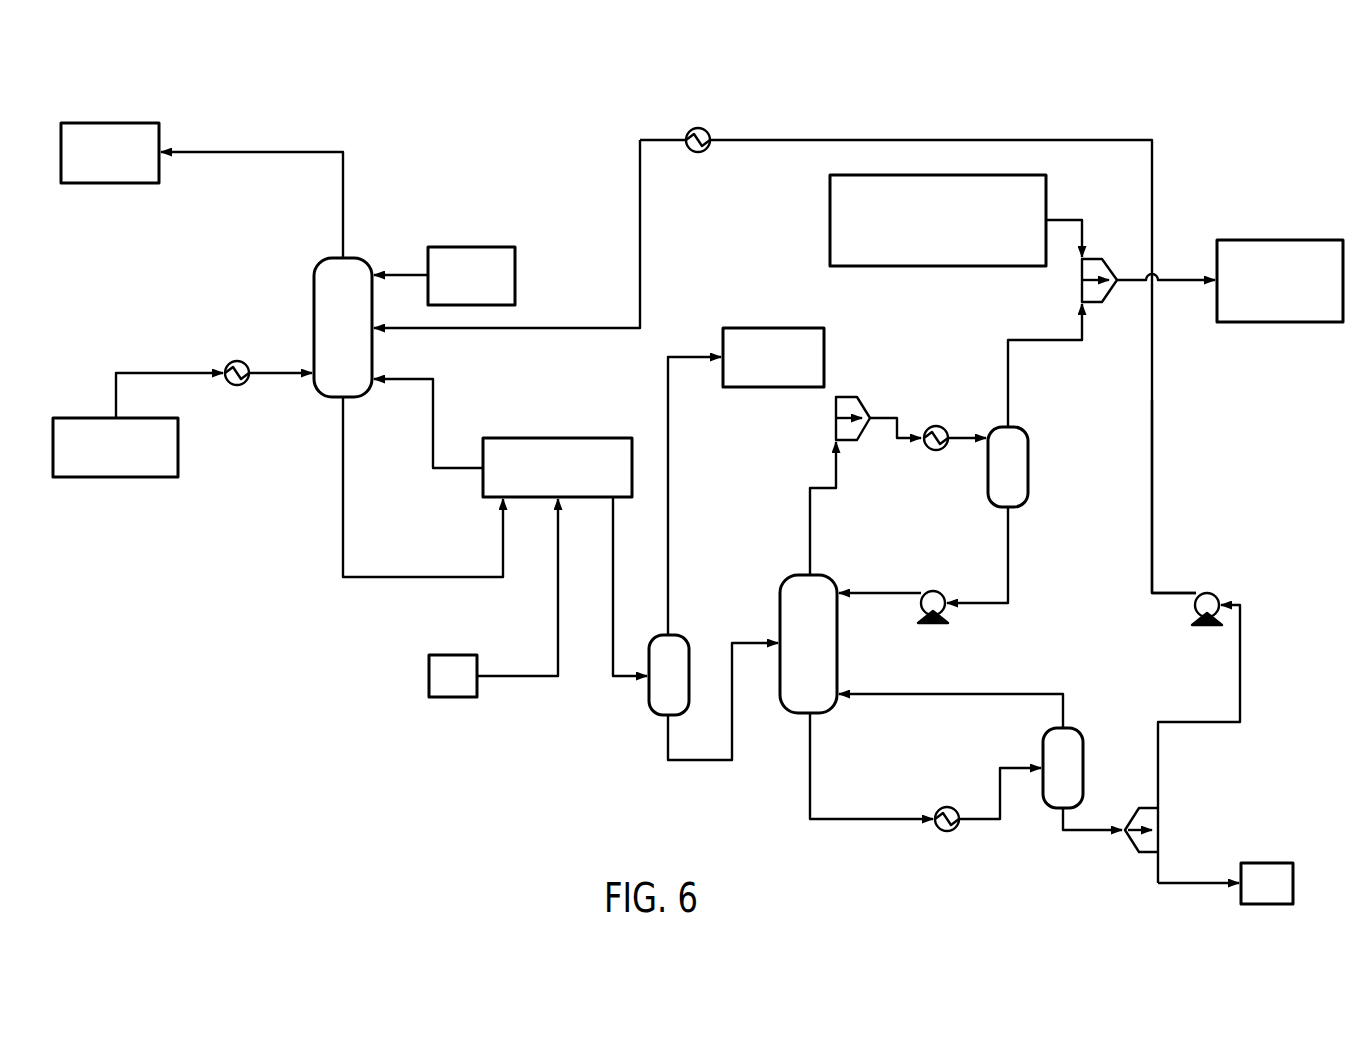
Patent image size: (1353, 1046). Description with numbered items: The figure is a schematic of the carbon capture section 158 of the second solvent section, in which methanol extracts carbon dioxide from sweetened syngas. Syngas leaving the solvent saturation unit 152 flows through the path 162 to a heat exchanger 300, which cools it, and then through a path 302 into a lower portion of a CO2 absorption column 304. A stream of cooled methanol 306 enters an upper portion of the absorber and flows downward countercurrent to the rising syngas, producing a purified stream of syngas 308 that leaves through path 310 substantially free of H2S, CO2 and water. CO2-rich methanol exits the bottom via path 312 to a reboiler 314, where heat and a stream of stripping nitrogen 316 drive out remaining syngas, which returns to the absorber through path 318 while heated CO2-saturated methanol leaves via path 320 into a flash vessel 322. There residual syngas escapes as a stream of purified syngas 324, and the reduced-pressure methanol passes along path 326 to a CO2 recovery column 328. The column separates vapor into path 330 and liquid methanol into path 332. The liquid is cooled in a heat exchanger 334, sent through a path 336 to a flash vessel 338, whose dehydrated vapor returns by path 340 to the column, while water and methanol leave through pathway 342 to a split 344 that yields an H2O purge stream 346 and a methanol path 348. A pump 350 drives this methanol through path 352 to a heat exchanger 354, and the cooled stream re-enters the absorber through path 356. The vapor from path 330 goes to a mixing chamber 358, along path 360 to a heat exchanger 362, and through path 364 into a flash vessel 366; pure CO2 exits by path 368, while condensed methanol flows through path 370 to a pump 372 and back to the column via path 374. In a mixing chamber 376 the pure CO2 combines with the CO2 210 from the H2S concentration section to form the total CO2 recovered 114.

The total CO2 recovered 114 is at (1284, 240).
The solvent saturation unit 152 is at (179, 457).
The carbon capture section 158 is at (1238, 124).
The path 162 is at (178, 375).
The CO2 from the H2S concentration section 210 is at (1004, 175).
The heat exchanger 300 is at (237, 361).
The path 302 is at (262, 375).
The CO2 absorption column 304 is at (352, 258).
The stream of cooled methanol 306 is at (507, 247).
The stream of syngas 308 is at (147, 123).
The path 310 is at (322, 152).
The path 312 is at (390, 577).
The reboiler 314 is at (560, 438).
The stream of stripping nitrogen 316 is at (457, 655).
The path 318 is at (434, 410).
The path 320 is at (613, 536).
The flash vessel 322 is at (686, 637).
The stream of purified syngas 324 is at (809, 328).
The path 326 is at (733, 756).
The CO2 recovery column 328 is at (838, 661).
The path 330 is at (809, 526).
The path 332 is at (811, 776).
The heat exchanger 334 is at (949, 832).
The path 336 is at (1000, 767).
The flash vessel 338 is at (1078, 728).
The path 340 is at (957, 694).
The pathway 342 is at (1094, 832).
The split 344 is at (1145, 853).
The H2O purge stream 346 is at (1282, 863).
The path 348 is at (1181, 722).
The pump 350 is at (1205, 593).
The path 352 is at (1150, 560).
The heat exchanger 354 is at (700, 128).
The path 356 is at (518, 328).
The mixing chamber 358 is at (835, 418).
The path 360 is at (896, 405).
The heat exchanger 362 is at (936, 452).
The path 364 is at (966, 433).
The flash vessel 366 is at (1028, 431).
The path 368 is at (1042, 343).
The path 370 is at (1010, 556).
The pump 372 is at (926, 592).
The path 374 is at (862, 593).
The mixing chamber 376 is at (1080, 292).